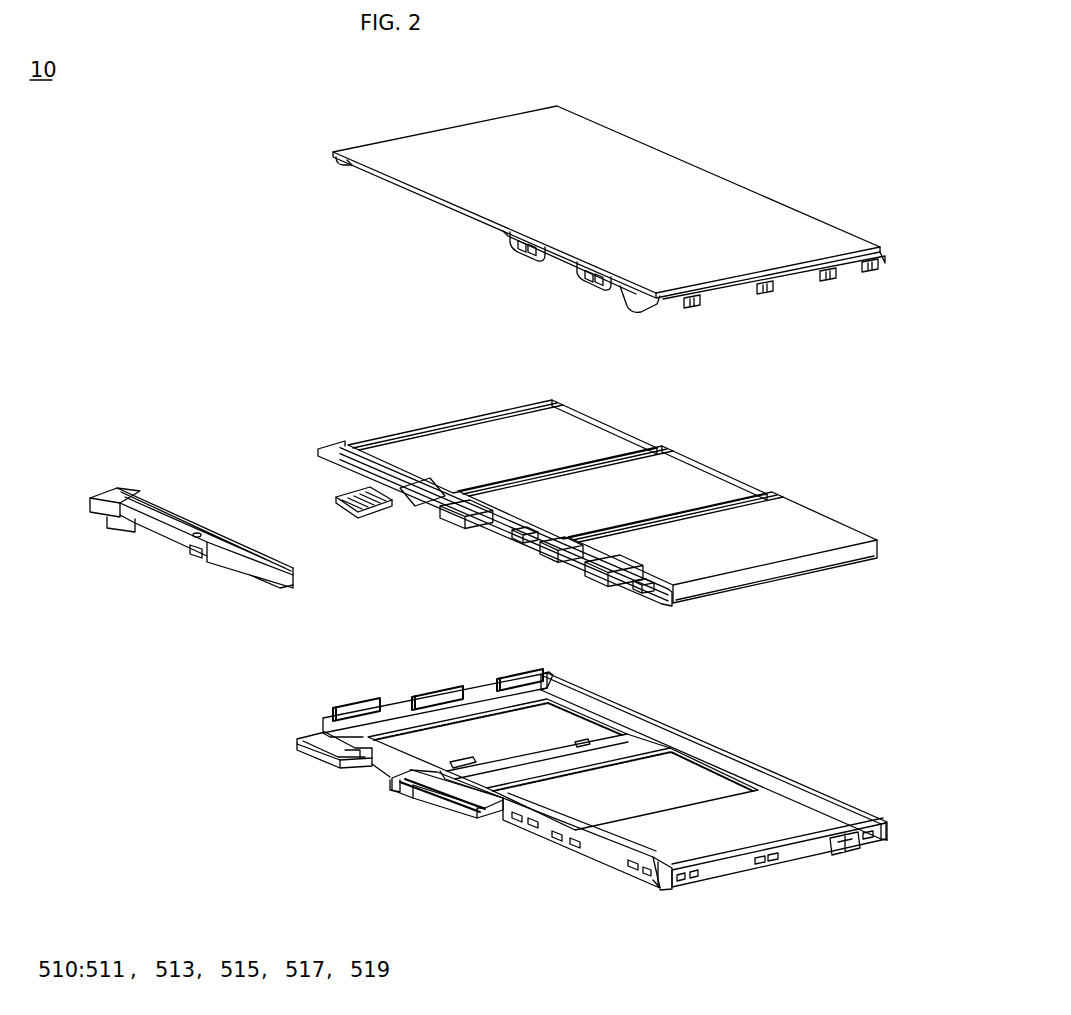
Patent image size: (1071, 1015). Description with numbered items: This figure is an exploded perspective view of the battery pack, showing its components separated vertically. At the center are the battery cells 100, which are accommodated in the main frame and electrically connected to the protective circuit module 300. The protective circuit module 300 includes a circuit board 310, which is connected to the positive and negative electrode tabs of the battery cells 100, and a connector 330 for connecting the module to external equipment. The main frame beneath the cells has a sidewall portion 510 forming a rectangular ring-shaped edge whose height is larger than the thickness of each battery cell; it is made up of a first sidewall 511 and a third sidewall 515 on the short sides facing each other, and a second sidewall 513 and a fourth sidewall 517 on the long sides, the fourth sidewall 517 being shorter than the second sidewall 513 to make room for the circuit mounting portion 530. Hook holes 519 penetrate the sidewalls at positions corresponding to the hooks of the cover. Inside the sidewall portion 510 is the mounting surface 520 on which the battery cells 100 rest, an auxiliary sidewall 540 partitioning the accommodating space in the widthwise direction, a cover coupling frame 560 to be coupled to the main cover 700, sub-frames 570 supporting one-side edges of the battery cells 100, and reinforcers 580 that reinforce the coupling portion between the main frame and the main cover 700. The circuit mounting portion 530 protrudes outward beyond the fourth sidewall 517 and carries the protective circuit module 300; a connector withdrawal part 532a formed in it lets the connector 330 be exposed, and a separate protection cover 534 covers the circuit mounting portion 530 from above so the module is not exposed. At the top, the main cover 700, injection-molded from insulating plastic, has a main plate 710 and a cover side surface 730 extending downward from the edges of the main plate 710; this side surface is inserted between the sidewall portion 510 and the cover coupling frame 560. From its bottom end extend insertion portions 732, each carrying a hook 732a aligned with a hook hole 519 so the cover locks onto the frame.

The battery cells 100 is at (602, 439).
The protective circuit module 300 is at (240, 413).
The circuit board 310 is at (347, 445).
The connector 330 is at (340, 495).
The sidewall portion 510 is at (561, 777).
The first sidewall 511 is at (490, 672).
The second sidewall 513 is at (731, 744).
The third sidewall 515 is at (804, 848).
The fourth sidewall 517 is at (613, 858).
The hook holes 519 is at (760, 866).
The mounting surface 520 is at (831, 811).
The circuit mounting portion 530 is at (318, 760).
The connector withdrawal part 532a is at (383, 772).
The protection cover 534 is at (98, 483).
The auxiliary sidewall 540 is at (646, 741).
The cover coupling frame 560 is at (589, 706).
The sub-frames 570 is at (544, 672).
The reinforcers 580 is at (421, 698).
The main cover 700 is at (745, 170).
The main plate 710 is at (810, 228).
The cover side surface 730 is at (728, 292).
The insertion portion 732 is at (788, 288).
The hook 732a is at (800, 273).